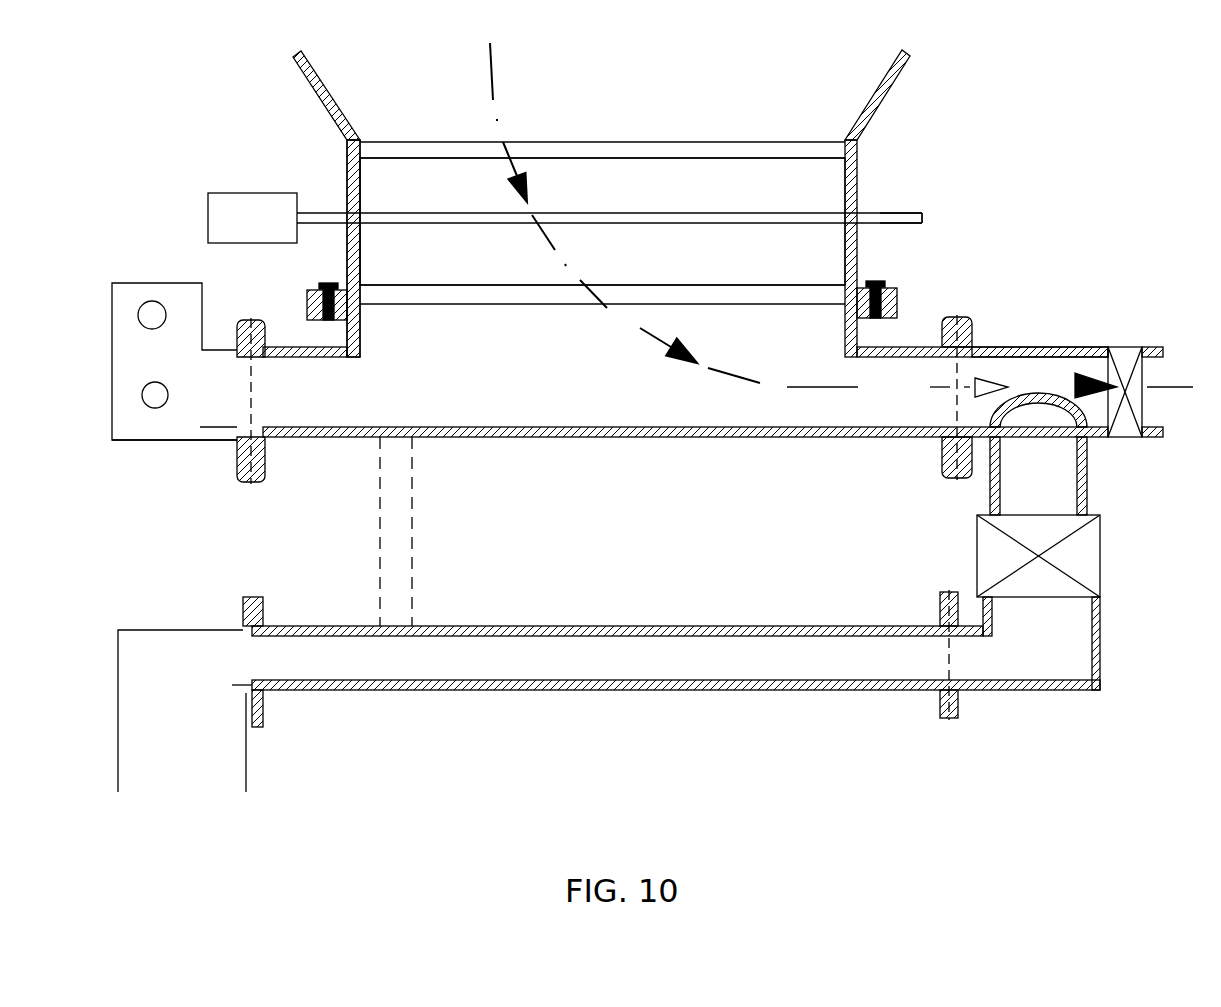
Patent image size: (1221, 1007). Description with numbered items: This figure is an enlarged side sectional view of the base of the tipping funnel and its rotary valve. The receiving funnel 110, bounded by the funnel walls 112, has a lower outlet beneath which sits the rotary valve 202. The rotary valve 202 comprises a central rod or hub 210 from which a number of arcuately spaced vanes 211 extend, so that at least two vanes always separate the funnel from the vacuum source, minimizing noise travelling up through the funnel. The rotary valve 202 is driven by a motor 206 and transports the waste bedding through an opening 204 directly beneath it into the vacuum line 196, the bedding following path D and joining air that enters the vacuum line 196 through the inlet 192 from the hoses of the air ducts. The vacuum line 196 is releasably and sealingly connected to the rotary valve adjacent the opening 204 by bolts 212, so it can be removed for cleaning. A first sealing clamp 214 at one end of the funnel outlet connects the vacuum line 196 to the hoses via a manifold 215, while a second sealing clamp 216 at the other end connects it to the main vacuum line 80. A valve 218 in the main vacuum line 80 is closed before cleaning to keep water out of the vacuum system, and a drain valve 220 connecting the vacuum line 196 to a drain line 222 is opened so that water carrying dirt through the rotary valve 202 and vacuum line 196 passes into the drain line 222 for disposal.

The main vacuum line 80 is at (1080, 346).
The receiving funnel 110 is at (733, 124).
The funnel wall 112 is at (877, 98).
The inlet 192 is at (150, 302).
The vacuum line 196 is at (728, 392).
The rotary valve 202 is at (602, 221).
The opening 204 is at (738, 322).
The motor 206 is at (565, 218).
The central rod or hub 210 is at (925, 219).
The vanes 211 is at (352, 174).
The bolts 212 is at (325, 287).
The first sealing clamp 214 is at (244, 318).
The manifold 215 is at (178, 442).
The second sealing clamp 216 is at (953, 316).
The valve 218 is at (1127, 430).
The drain valve 220 is at (985, 545).
The drain line 222 is at (716, 626).